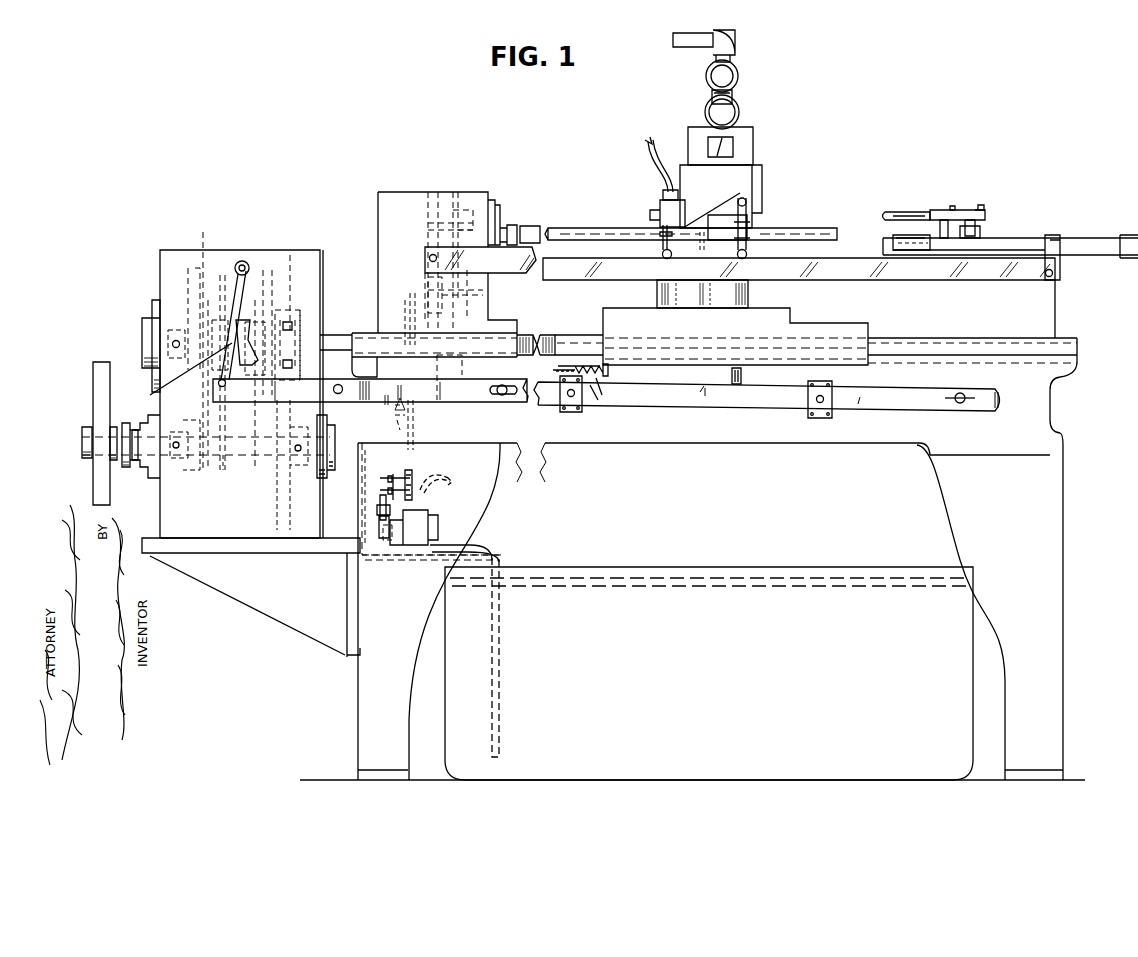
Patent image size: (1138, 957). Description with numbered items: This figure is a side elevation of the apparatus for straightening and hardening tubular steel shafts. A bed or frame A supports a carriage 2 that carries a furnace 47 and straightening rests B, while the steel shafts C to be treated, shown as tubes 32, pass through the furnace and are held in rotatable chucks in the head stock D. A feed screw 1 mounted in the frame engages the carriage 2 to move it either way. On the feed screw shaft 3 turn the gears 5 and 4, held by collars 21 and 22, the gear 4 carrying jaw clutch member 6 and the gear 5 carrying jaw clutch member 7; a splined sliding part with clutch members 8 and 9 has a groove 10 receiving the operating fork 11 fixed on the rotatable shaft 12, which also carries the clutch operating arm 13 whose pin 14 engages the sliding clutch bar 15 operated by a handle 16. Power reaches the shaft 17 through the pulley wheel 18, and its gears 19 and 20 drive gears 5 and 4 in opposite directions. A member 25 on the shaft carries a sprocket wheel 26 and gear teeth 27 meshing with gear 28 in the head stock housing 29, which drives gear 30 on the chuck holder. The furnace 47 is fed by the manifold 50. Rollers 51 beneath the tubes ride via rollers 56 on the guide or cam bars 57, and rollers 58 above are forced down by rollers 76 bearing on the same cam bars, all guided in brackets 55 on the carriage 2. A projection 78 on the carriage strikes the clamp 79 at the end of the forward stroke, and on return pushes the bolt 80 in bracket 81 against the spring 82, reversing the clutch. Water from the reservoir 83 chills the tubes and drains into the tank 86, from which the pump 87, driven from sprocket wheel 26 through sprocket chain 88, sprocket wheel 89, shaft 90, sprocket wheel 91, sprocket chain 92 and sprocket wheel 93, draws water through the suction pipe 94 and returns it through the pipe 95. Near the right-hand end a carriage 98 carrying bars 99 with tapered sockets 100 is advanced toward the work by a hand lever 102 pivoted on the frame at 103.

The feed screw 1 is at (548, 333).
The carriage 2 is at (603, 310).
The feed screw shaft 3 is at (334, 335).
The gear 4 is at (295, 270).
The gear 5 is at (188, 268).
The jaw clutch member 6 is at (276, 310).
The jaw clutch member 7 is at (204, 250).
The clutch member 8 is at (258, 312).
The clutch member 9 is at (222, 285).
The groove 10 is at (370, 399).
The operating fork 11 is at (247, 290).
The rotatable shaft 12 is at (240, 262).
The clutch operating arm 13 is at (185, 375).
The pin 14 is at (221, 388).
The clutch bar 15 is at (703, 401).
The handle 16 is at (341, 394).
The shaft 17 is at (222, 460).
The pulley wheel 18 is at (96, 385).
The gear 19 is at (192, 470).
The gear 20 is at (277, 408).
The collar 21 is at (175, 325).
The collar 22 is at (302, 320).
The member 25 is at (470, 400).
The sprocket wheel 26 is at (412, 300).
The gear teeth 27 is at (462, 362).
The gear 28 is at (470, 310).
The head stock housing 29 is at (378, 207).
The gear 30 is at (456, 200).
The tubes 32 is at (822, 232).
The furnace 47 is at (721, 207).
The manifold 50 is at (706, 108).
The rollers 51 is at (660, 243).
The brackets 55 is at (749, 293).
The rollers 56 is at (664, 260).
The guide or cam bars 57 is at (799, 269).
The rollers 58 is at (750, 222).
The rollers 76 is at (747, 254).
The projection 78 is at (742, 377).
The clamp 79 is at (810, 415).
The bolt 80 is at (593, 373).
The bracket 81 is at (575, 411).
The spring 82 is at (600, 393).
The water reservoir 83 is at (660, 203).
The tank 86 is at (709, 673).
The rotating pump 87 is at (428, 520).
The sprocket chain 88 is at (408, 430).
The sprocket wheel 89 is at (415, 475).
The shaft 90 is at (394, 475).
The sprocket wheel 91 is at (380, 494).
The sprocket chain 92 is at (377, 514).
The sprocket wheel 93 is at (383, 545).
The suction pipe 94 is at (504, 634).
The pipe 95 is at (450, 480).
The carriage 98 is at (1033, 238).
The bars 99 is at (916, 254).
The tapered socket 100 is at (893, 238).
The hand lever 102 is at (908, 212).
The pivot 103 is at (954, 210).
The bed or frame A is at (720, 456).
The straightening rests B is at (767, 173).
The steel shafts C is at (578, 219).
The head stock D is at (440, 180).